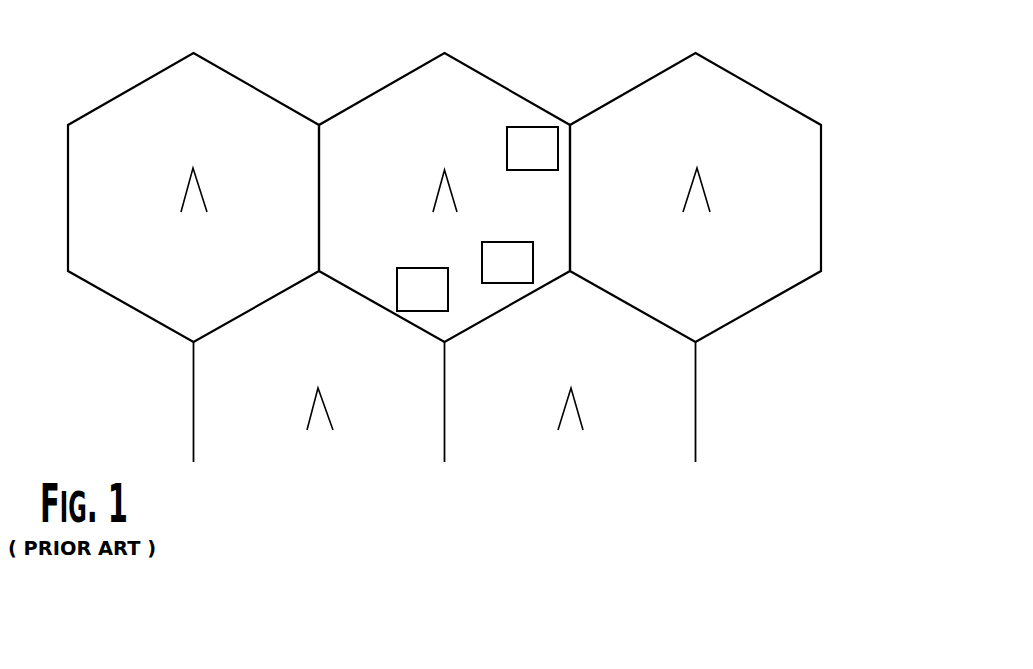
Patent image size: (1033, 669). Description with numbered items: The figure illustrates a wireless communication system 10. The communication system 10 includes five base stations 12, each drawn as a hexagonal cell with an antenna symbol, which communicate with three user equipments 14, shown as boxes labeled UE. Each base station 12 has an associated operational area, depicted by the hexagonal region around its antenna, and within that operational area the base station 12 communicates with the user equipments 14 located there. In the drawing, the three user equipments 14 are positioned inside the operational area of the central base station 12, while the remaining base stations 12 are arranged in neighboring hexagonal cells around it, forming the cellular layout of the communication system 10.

The wireless communication system 10 is at (711, 38).
The base station 12 is at (470, 299).
The user equipment 14 is at (449, 209).